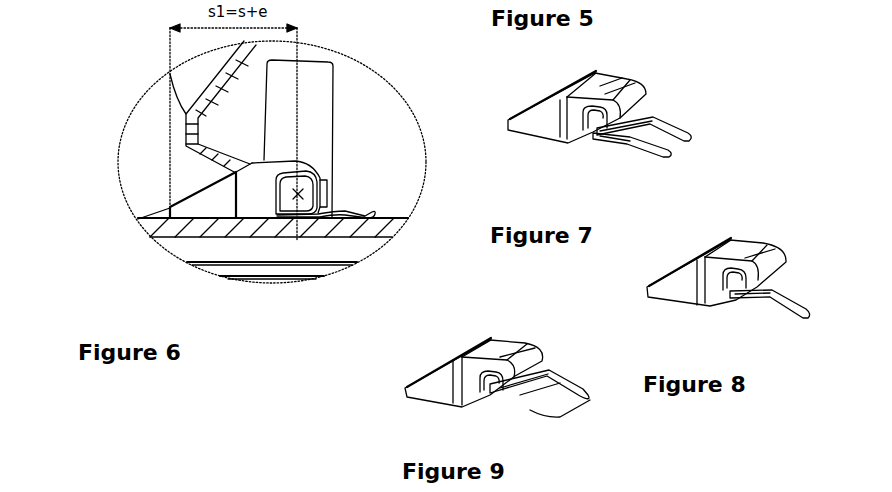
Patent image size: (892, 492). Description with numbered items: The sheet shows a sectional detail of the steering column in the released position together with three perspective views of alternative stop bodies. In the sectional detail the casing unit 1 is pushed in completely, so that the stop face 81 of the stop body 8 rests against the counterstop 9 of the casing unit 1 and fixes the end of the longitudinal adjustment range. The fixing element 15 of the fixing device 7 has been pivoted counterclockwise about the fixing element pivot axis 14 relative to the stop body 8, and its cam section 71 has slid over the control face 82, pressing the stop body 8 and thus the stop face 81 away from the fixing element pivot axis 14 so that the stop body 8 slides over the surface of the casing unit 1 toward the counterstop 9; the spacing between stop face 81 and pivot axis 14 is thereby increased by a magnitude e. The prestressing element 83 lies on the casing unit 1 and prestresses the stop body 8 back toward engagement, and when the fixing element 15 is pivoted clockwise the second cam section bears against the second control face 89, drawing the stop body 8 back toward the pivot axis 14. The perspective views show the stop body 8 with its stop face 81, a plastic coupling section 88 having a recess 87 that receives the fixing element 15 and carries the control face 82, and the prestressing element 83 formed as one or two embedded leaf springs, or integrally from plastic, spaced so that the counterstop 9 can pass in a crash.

In FIG. 6, the casing unit 1 is at (195, 228).
In FIG. 6, the fixing device 7 is at (300, 216).
In FIG. 6, the stop body 8 is at (255, 200).
In FIG. 7, the stop body 8 is at (530, 158).
In FIG. 8, the stop body 8 is at (688, 319).
In FIG. 9, the stop body 8 is at (448, 419).
In FIG. 6, the counterstop 9 is at (163, 221).
In FIG. 6, the fixing element pivot axis 14 is at (312, 213).
In FIG. 6, the fixing element 15 is at (319, 171).
In FIG. 6, the cam section 71 is at (299, 160).
In FIG. 6, the stop face 81 is at (170, 215).
In FIG. 7, the stop face 81 is at (505, 133).
In FIG. 8, the stop face 81 is at (645, 293).
In FIG. 9, the stop face 81 is at (405, 396).
In FIG. 6, the control face 82 is at (287, 183).
In FIG. 7, the control face 82 is at (592, 140).
In FIG. 8, the control face 82 is at (735, 278).
In FIG. 9, the control face 82 is at (487, 400).
In FIG. 6, the prestressing element 83 is at (352, 222).
In FIG. 7, the prestressing element 83 is at (660, 138).
In FIG. 8, the prestressing element 83 is at (777, 305).
In FIG. 9, the prestressing element 83 is at (537, 400).
In FIG. 6, the recess 87 is at (264, 171).
In FIG. 7, the recess 87 is at (633, 110).
In FIG. 8, the recess 87 is at (723, 302).
In FIG. 9, the recess 87 is at (533, 373).
In FIG. 7, the coupling section 88 is at (578, 158).
In FIG. 7, the second control face 89 is at (598, 115).
In FIG. 8, the second control face 89 is at (742, 273).
In FIG. 9, the second control face 89 is at (500, 378).